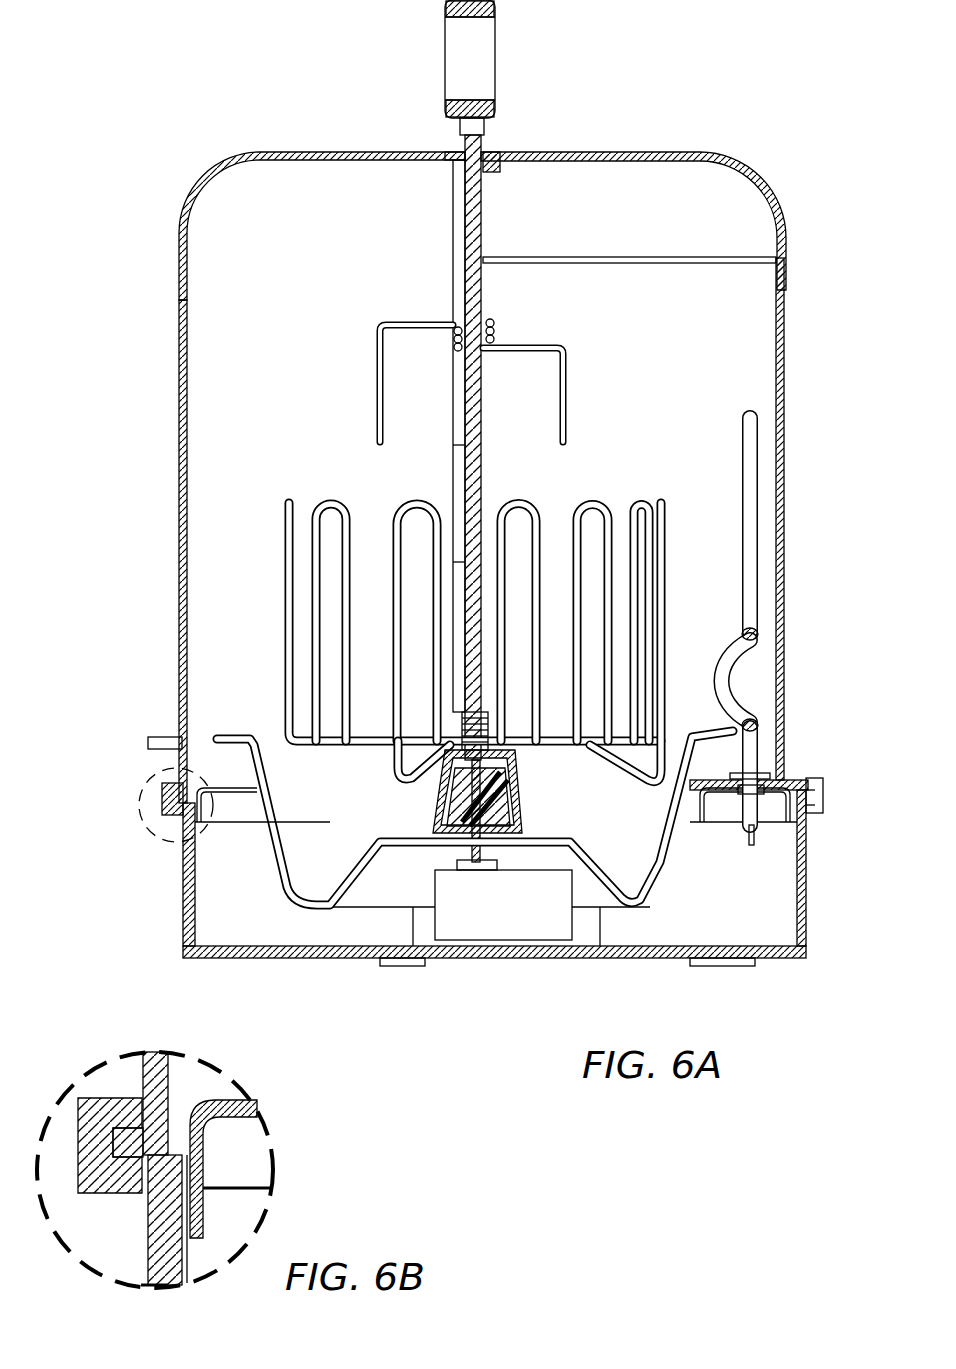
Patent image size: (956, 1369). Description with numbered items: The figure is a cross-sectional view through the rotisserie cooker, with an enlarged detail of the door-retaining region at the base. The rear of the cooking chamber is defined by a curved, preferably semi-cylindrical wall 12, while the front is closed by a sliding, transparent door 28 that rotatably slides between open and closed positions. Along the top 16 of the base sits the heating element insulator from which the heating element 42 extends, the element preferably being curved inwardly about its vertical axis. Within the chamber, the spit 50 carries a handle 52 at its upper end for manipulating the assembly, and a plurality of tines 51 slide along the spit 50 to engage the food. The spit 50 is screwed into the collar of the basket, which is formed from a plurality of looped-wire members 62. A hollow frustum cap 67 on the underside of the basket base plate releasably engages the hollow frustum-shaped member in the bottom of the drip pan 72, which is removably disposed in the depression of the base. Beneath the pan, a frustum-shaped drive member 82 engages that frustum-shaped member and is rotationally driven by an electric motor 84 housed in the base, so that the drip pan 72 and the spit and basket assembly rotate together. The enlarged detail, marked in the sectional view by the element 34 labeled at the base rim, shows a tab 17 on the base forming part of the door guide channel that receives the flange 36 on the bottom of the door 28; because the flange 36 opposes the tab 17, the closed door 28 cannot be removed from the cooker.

In FIG. 6A, the wall 12 is at (786, 335).
In FIG. 6A, the top of base 16 is at (760, 195).
In FIG. 6B, the tab 17 is at (117, 1098).
In FIG. 6A, the sliding transparent door 28 is at (215, 180).
In FIG. 6A, the support ring 34 is at (176, 737).
In FIG. 6B, the support ring 34 is at (231, 1169).
In FIG. 6B, the flange 36 is at (137, 1145).
In FIG. 6A, the heating element 42 is at (757, 468).
In FIG. 6A, the spit 50 is at (485, 215).
In FIG. 6A, the tines 51 is at (568, 378).
In FIG. 6A, the handle 52 is at (497, 62).
In FIG. 6A, the looped-wire members 62 is at (312, 500).
In FIG. 6A, the hollow frustum cap 67 is at (515, 765).
In FIG. 6A, the drip pan 72 is at (305, 860).
In FIG. 6A, the frustum-shaped drive member 82 is at (510, 800).
In FIG. 6A, the electric motor 84 is at (517, 922).